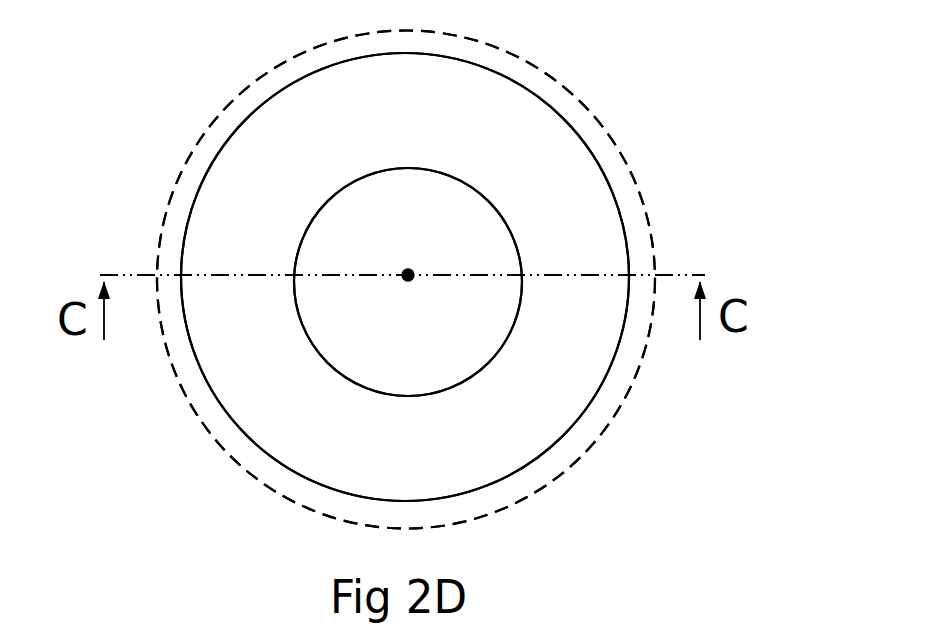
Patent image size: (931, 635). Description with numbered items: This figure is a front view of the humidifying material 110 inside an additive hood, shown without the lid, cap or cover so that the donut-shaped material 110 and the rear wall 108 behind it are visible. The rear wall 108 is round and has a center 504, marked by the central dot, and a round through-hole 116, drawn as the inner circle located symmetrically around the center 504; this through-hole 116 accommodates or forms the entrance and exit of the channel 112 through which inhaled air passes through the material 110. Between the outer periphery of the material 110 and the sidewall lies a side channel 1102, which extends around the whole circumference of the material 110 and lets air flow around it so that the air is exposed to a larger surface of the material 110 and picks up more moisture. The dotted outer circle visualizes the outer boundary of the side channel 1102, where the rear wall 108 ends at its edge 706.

The rear wall 108 is at (562, 87).
The material 110 is at (548, 175).
The channel 112 is at (436, 314).
The through-hole 116 is at (445, 355).
The center 504 is at (408, 275).
The edge 706 is at (233, 468).
The side channel 1102 is at (608, 404).